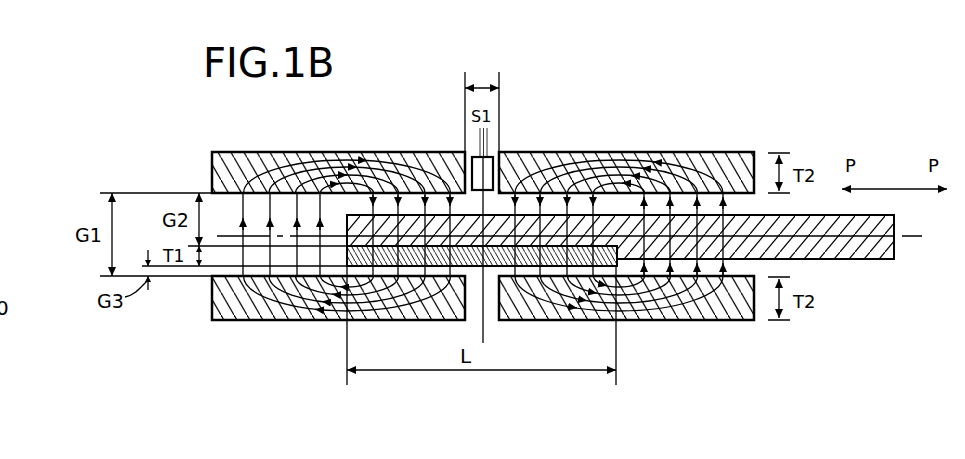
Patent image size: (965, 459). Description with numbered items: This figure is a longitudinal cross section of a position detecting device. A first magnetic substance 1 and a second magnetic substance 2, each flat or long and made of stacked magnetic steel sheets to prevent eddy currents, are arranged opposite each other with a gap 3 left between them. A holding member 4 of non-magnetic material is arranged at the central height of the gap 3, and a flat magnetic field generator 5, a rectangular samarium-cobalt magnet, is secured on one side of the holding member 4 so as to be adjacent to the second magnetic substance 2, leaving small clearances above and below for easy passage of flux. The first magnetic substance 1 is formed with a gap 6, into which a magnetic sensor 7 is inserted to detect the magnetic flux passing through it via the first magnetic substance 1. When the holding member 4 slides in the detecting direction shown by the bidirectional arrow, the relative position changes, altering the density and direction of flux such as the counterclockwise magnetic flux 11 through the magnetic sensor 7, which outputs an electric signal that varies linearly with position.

The first magnetic substance 1 is at (384, 152).
The second magnetic substance 2 is at (483, 322).
The gap 3 is at (110, 218).
The holding member 4 is at (842, 259).
The magnetic field generator 5 is at (464, 262).
The gap 6 is at (483, 82).
The magnetic sensor 7 is at (492, 157).
The counterclockwise magnetic flux 11 is at (683, 321).